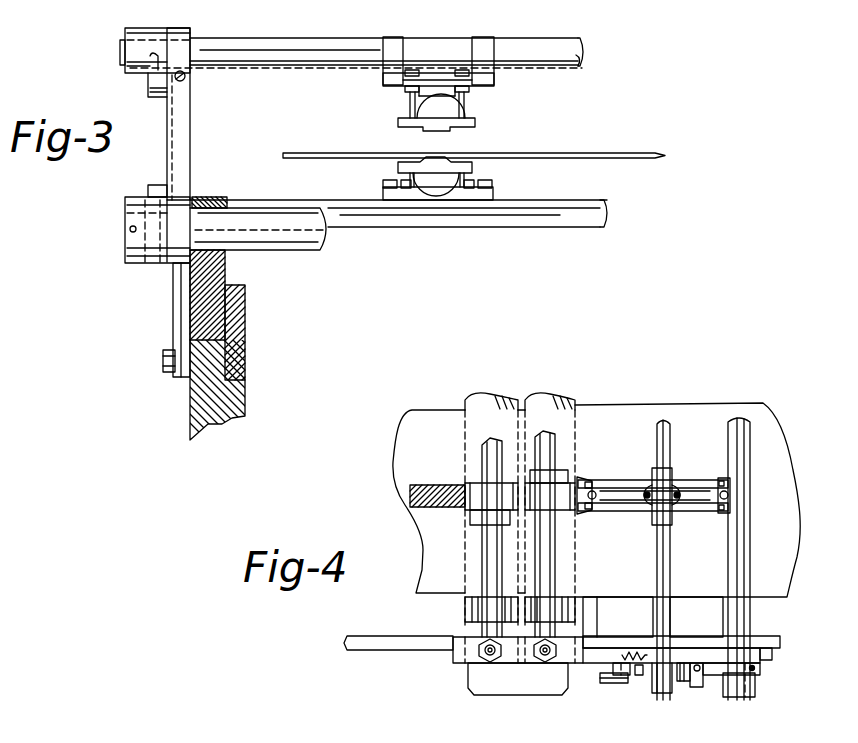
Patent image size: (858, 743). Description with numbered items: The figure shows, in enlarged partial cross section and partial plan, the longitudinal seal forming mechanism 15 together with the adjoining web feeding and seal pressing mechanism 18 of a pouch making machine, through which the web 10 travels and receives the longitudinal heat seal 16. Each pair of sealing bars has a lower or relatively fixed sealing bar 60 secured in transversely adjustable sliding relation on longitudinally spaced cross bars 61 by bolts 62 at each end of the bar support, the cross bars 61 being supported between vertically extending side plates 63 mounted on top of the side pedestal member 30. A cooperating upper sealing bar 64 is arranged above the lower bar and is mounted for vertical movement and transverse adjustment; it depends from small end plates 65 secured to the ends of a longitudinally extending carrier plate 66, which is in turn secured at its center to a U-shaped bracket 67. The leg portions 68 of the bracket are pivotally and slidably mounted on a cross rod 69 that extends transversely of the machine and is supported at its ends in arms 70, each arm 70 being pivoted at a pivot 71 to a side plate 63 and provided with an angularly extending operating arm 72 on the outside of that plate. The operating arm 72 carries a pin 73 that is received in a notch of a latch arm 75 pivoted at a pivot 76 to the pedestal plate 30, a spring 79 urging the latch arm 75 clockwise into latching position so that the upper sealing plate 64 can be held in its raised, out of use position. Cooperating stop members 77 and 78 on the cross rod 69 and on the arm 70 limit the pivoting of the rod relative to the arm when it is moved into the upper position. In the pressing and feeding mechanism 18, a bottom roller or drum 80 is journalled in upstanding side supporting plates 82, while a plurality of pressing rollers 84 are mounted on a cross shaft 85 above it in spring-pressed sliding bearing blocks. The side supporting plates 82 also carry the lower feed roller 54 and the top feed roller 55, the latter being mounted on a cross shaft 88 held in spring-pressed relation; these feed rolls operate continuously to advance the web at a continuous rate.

In FIG. 4, the web 10 is at (403, 443).
In FIG. 3, the longitudinal seal forming mechanism 15 is at (450, 40).
In FIG. 4, the longitudinal heat seal 16 is at (410, 496).
In FIG. 4, the web feeding and seal pressing and setting mechanism 18 is at (476, 420).
In FIG. 3, the side pedestal member 30 is at (246, 397).
In FIG. 4, the lower feed roller 54 is at (465, 606).
In FIG. 4, the top feed roller 55 is at (477, 490).
In FIG. 3, the lower sealing bar 60 is at (474, 166).
In FIG. 3, the cross bar 61 is at (608, 214).
In FIG. 4, the cross bar 61 is at (598, 614).
In FIG. 3, the bolt 62 is at (384, 184).
In FIG. 3, the side plate 63 is at (227, 274).
In FIG. 3, the upper sealing bar 64 is at (476, 122).
In FIG. 3, the end plate 65 is at (495, 79).
In FIG. 4, the end plate 65 is at (732, 500).
In FIG. 3, the carrier plate 66 is at (437, 90).
In FIG. 4, the carrier plate 66 is at (708, 465).
In FIG. 3, the U-shaped bracket 67 is at (385, 78).
In FIG. 3, the leg portion 68 is at (395, 40).
In FIG. 4, the leg portion 68 is at (672, 470).
In FIG. 3, the cross rod 69 is at (584, 50).
In FIG. 4, the cross rod 69 is at (672, 562).
In FIG. 3, the arm 70 is at (191, 132).
In FIG. 4, the arm 70 is at (663, 694).
In FIG. 3, the pivot 71 is at (124, 229).
In FIG. 4, the pivot 71 is at (757, 697).
In FIG. 4, the operating arm 72 is at (624, 677).
In FIG. 4, the pin 73 is at (640, 676).
In FIG. 3, the latch arm 75 is at (174, 312).
In FIG. 4, the latch arm 75 is at (601, 674).
In FIG. 3, the pivot 76 is at (162, 358).
In FIG. 4, the stop member 77 is at (685, 682).
In FIG. 4, the stop member 78 is at (695, 688).
In FIG. 4, the spring 79 is at (628, 654).
In FIG. 4, the bottom roller 80 is at (578, 392).
In FIG. 4, the side supporting plate 82 is at (460, 656).
In FIG. 4, the pressing roller 84 is at (552, 488).
In FIG. 4, the cross shaft 85 is at (557, 565).
In FIG. 4, the cross shaft 88 is at (484, 563).